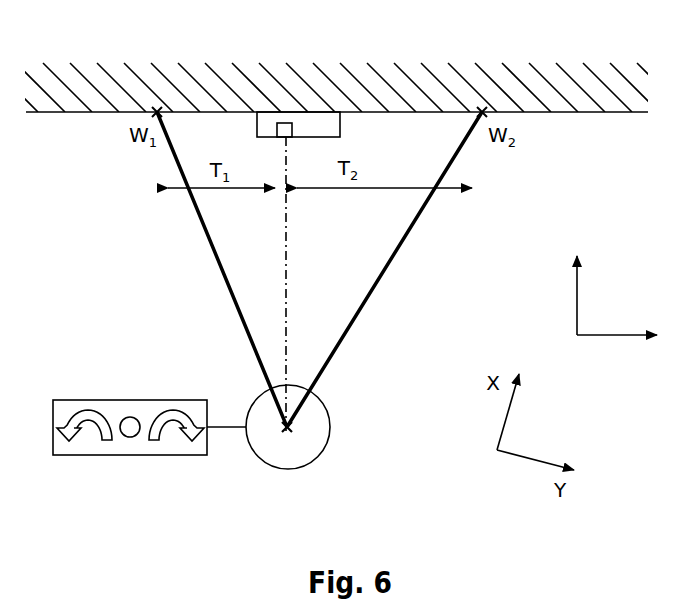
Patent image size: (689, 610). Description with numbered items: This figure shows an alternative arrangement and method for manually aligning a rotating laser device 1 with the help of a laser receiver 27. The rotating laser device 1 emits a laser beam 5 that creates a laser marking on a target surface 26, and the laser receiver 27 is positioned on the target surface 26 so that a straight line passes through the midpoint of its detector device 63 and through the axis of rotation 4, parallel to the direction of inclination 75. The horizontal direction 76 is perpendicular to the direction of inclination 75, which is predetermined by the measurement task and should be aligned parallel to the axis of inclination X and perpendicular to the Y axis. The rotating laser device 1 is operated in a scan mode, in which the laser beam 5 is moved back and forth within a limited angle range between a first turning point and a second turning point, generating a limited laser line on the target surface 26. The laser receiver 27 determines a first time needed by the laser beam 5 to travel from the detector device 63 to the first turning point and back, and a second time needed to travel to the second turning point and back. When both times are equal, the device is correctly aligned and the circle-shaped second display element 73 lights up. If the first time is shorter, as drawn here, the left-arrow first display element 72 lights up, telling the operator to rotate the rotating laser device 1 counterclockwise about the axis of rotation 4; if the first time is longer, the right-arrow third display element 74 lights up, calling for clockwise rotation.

The rotating laser device 1 is at (322, 400).
The axis of rotation 4 is at (289, 432).
The laser beam 5 is at (218, 265).
The target surface 26 is at (61, 92).
The laser receiver 27 is at (320, 128).
The detector device 63 is at (283, 123).
The first display element 72 is at (67, 400).
The second display element 73 is at (130, 417).
The third display element 74 is at (192, 410).
The direction of inclination 75 is at (558, 294).
The horizontal direction 76 is at (618, 352).